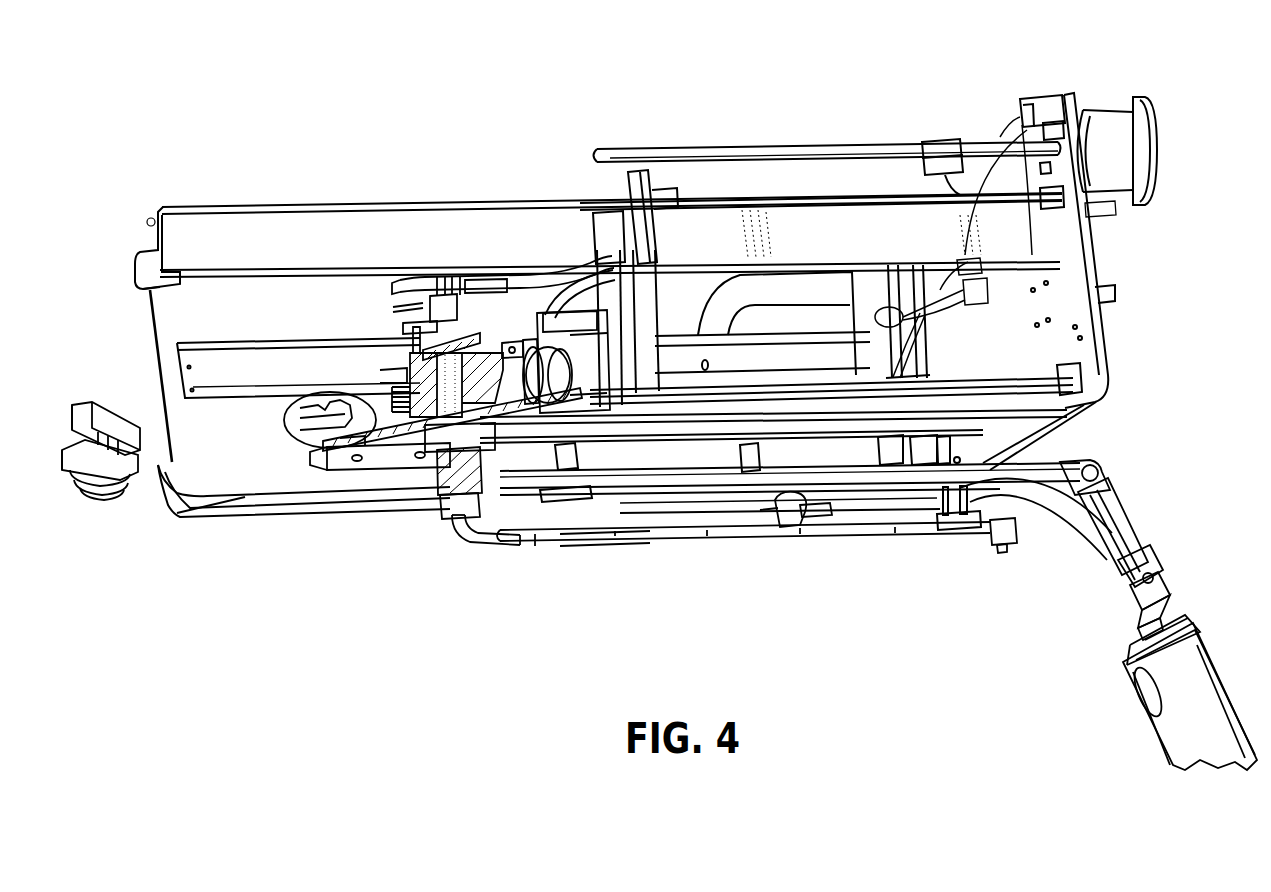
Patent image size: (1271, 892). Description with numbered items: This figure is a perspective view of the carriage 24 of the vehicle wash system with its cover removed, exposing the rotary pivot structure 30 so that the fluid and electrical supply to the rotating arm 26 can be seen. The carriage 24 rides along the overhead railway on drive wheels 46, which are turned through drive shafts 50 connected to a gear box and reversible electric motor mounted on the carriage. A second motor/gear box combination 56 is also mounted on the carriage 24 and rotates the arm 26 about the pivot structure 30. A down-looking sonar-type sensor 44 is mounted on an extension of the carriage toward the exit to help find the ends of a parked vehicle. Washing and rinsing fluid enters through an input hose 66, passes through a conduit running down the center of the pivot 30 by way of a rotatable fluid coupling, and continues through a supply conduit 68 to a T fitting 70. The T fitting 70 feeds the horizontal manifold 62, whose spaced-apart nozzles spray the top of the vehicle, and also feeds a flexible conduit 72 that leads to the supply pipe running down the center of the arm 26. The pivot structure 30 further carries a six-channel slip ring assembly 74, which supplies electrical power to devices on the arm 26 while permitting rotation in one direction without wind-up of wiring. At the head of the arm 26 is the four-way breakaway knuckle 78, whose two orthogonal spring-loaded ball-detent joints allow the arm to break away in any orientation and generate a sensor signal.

The carriage 24 is at (812, 197).
The arm 26 is at (1170, 742).
The pivot structure 30 is at (420, 520).
The sonar-type sensor 44 is at (125, 498).
The drive wheels 46 is at (1150, 122).
The drive shafts 50 is at (715, 155).
The second motor/gear box combination 56 is at (600, 330).
The horizontal manifold 62 is at (830, 537).
The input hose 66 is at (590, 266).
The supply conduit 68 is at (545, 550).
The T fitting 70 is at (780, 520).
The flexible conduit 72 is at (1053, 505).
The slip ring assembly 74 is at (415, 472).
The four-way breakaway knuckle 78 is at (1148, 562).